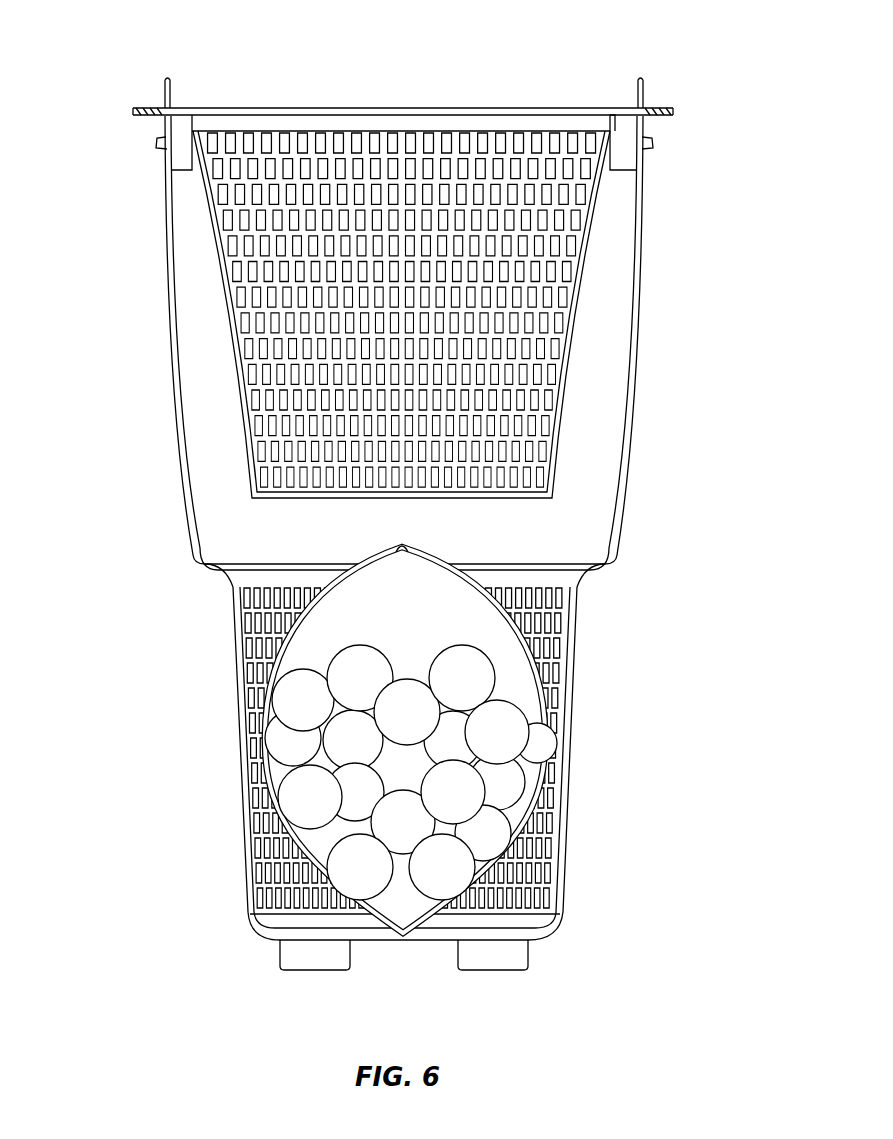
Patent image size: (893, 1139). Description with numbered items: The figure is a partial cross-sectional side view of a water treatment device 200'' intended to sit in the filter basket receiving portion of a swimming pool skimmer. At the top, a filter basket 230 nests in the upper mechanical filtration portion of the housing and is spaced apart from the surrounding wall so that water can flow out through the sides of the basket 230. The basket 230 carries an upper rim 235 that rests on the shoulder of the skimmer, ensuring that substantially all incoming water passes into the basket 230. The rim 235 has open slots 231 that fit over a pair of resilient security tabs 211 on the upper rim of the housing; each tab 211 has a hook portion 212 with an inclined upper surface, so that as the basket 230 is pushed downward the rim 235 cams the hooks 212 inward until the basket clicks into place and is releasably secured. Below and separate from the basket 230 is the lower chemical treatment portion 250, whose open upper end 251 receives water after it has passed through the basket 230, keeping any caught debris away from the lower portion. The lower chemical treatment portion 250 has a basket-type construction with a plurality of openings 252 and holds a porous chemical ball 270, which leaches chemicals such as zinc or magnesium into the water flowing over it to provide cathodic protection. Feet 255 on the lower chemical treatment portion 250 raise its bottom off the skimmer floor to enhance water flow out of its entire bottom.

The water treatment device 200'' is at (398, 524).
The security tab 211 is at (166, 80).
The hook portion 212 is at (645, 110).
The upper rim 235 is at (674, 111).
The filter basket 230 is at (404, 277).
The open slot 231 is at (632, 110).
The upper end 251 is at (576, 602).
The lower chemical treatment portion 250 is at (414, 810).
The openings 252 is at (277, 625).
The feet 255 is at (312, 972).
The porous chemical ball 270 is at (425, 635).